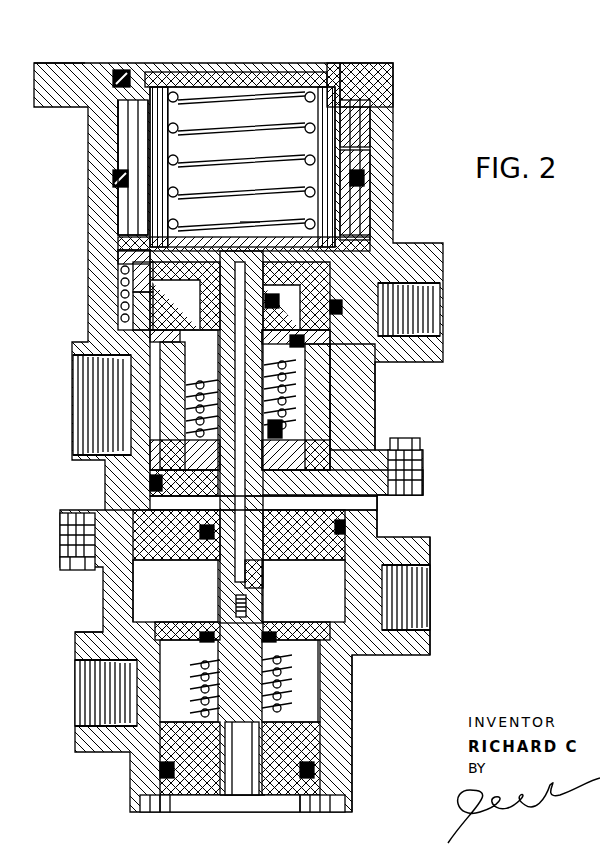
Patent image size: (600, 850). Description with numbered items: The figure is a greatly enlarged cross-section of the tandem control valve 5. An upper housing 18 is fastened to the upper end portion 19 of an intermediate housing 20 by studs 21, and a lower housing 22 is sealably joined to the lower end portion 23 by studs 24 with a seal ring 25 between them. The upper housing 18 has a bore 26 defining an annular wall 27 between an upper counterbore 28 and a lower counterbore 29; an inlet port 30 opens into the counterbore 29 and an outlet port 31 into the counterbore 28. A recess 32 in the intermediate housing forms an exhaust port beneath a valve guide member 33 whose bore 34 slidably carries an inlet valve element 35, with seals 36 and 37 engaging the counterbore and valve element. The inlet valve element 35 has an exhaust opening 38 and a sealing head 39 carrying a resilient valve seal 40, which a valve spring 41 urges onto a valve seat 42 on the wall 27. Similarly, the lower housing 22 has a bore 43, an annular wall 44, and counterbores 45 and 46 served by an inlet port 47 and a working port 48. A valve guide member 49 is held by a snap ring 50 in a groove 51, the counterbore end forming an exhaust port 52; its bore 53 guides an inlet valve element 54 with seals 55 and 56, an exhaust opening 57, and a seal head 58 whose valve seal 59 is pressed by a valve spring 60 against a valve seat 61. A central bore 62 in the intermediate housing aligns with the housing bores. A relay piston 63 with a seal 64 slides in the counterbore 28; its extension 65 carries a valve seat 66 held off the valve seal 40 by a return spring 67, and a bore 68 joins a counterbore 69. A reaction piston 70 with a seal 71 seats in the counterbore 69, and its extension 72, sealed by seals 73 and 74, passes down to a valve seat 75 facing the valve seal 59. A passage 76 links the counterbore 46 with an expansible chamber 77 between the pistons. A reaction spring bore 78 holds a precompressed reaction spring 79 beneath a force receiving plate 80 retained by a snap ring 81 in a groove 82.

The tandem control valve 5 is at (56, 57).
The upper housing 18 is at (395, 148).
The upper end portion 19 is at (342, 469).
The intermediate housing 20 is at (378, 522).
The studs 21 is at (423, 443).
The lower housing 22 is at (82, 645).
The lower end portion 23 is at (60, 530).
The studs 24 is at (60, 565).
The seal ring 25 is at (405, 597).
The bore 26 is at (279, 300).
The annular wall 27 is at (330, 307).
The upper counterbore 28 is at (365, 210).
The lower counterbore 29 is at (350, 392).
The inlet port 30 is at (73, 375).
The outlet port 31 is at (435, 282).
The recess 32 is at (127, 516).
The valve guide member 33 is at (320, 430).
The bore 34 is at (290, 500).
The inlet valve element 35 is at (195, 405).
The seal 36 is at (160, 483).
The seal 37 is at (165, 455).
The exhaust opening 38 is at (190, 375).
The sealing head 39 is at (320, 372).
The valve seal 40 is at (322, 333).
The valve spring 41 is at (300, 400).
The valve seat 42 is at (175, 340).
The bore 43 is at (270, 620).
The annular wall 44 is at (305, 622).
The counterbore 45 is at (340, 672).
The counterbore 46 is at (133, 605).
The inlet port 47 is at (80, 718).
The working port 48 is at (418, 622).
The valve guide member 49 is at (318, 738).
The snap ring 50 is at (310, 812).
The groove 51 is at (330, 800).
The exhaust port 52 is at (160, 812).
The bore 53 is at (258, 800).
The inlet valve element 54 is at (285, 693).
The seal 55 is at (314, 770).
The seal 56 is at (190, 758).
The exhaust opening 57 is at (240, 795).
The seal head 58 is at (276, 637).
The valve seal 59 is at (191, 688).
The valve spring 60 is at (318, 712).
The valve seat 61 is at (188, 647).
The bore 62 is at (263, 545).
The relay piston 63 is at (122, 215).
The seal 64 is at (112, 178).
The extension 65 is at (185, 283).
The valve seat 66 is at (205, 305).
The return spring 67 is at (118, 278).
The bore 68 is at (240, 215).
The counterbore 69 is at (145, 245).
The reaction piston 70 is at (372, 115).
The seal 71 is at (395, 80).
The extension 72 is at (222, 572).
The seal 73 is at (282, 268).
The seal 74 is at (210, 530).
The valve seat 75 is at (215, 622).
The passage 76 is at (250, 572).
The expansible chamber 77 is at (280, 237).
The reaction spring bore 78 is at (170, 140).
The reaction spring 79 is at (185, 92).
The force receiving plate 80 is at (270, 80).
The snap ring 81 is at (330, 72).
The groove 82 is at (122, 80).